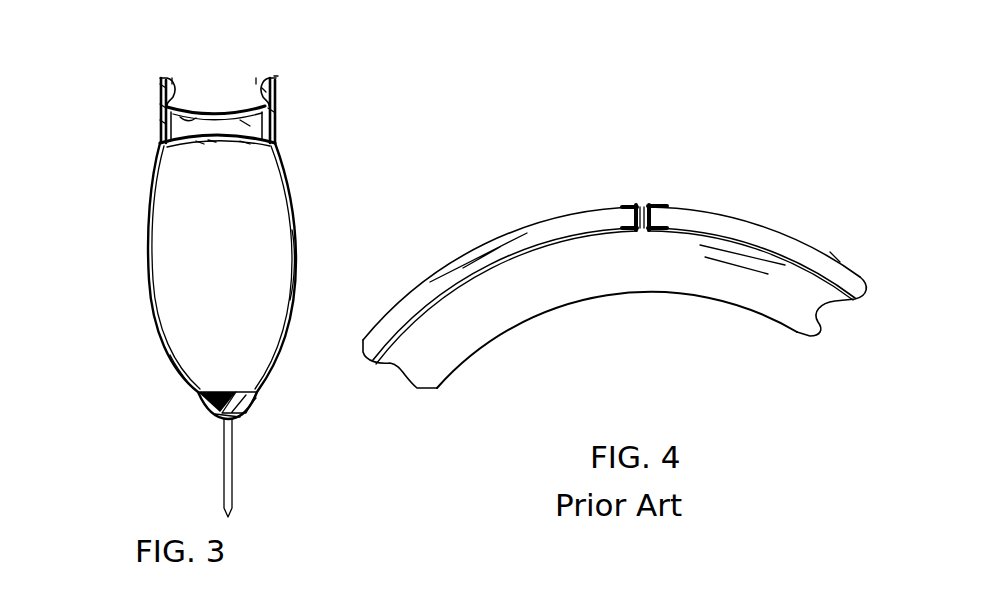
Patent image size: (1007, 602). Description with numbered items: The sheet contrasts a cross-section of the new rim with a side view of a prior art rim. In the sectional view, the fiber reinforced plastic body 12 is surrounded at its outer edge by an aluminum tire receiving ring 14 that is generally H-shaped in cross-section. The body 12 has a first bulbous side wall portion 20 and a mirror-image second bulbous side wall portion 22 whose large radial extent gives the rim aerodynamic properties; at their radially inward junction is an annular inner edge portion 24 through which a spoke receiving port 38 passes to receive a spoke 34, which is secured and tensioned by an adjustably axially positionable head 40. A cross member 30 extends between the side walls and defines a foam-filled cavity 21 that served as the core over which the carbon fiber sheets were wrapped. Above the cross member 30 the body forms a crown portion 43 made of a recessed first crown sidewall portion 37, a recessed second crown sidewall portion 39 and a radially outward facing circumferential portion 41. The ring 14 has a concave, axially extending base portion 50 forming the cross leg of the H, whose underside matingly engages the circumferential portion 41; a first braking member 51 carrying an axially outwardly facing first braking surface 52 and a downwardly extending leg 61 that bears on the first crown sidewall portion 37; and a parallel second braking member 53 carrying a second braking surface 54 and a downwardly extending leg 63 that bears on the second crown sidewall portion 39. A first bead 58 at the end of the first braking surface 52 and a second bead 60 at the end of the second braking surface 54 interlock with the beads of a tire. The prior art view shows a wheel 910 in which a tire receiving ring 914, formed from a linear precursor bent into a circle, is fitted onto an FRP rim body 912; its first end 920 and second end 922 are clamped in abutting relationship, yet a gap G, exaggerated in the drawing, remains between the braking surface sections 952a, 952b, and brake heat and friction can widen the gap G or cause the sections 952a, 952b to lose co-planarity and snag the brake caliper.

In FIG. 3, the carbon fiber body 12 is at (129, 254).
In FIG. 3, the tire receiving ring 14 is at (132, 62).
In FIG. 3, the first bulbous side wall portion 20 is at (309, 252).
In FIG. 3, the cavity 21 is at (250, 124).
In FIG. 3, the second bulbous side wall portion 22 is at (163, 364).
In FIG. 3, the annular inner edge portion 24 is at (262, 427).
In FIG. 3, the cross member 30 is at (212, 143).
In FIG. 3, the spoke 34 is at (248, 495).
In FIG. 3, the first crown sidewall portion 37 is at (245, 143).
In FIG. 3, the spoke receiving port 38 is at (220, 425).
In FIG. 3, the second crown sidewall portion 39 is at (200, 143).
In FIG. 3, the adjustably axially positionable head 40 is at (242, 392).
In FIG. 3, the radially outward facing circumferential portion 41 is at (185, 104).
In FIG. 3, the crown portion 43 is at (137, 152).
In FIG. 3, the FRP body engaging base portion 50 is at (231, 90).
In FIG. 3, the first braking member 51 is at (290, 63).
In FIG. 3, the first braking surface 52 is at (277, 86).
In FIG. 3, the second braking member 53 is at (144, 108).
In FIG. 3, the second braking surface 54 is at (160, 86).
In FIG. 3, the first bead 58 is at (256, 77).
In FIG. 3, the second bead 60 is at (172, 78).
In FIG. 3, the downwardly extending leg 61 is at (275, 110).
In FIG. 3, the downwardly extending leg 63 is at (158, 122).
In FIG. 4, the prior art wheel 910 is at (781, 77).
In FIG. 4, the FRP rim body 912 is at (738, 307).
In FIG. 4, the tire receiving ring 914 is at (835, 237).
In FIG. 4, the first end 920 is at (637, 205).
In FIG. 4, the second end 922 is at (654, 203).
In FIG. 4, the braking surface section 952a is at (592, 218).
In FIG. 4, the braking surface section 952b is at (722, 216).
In FIG. 4, the gap G is at (641, 205).